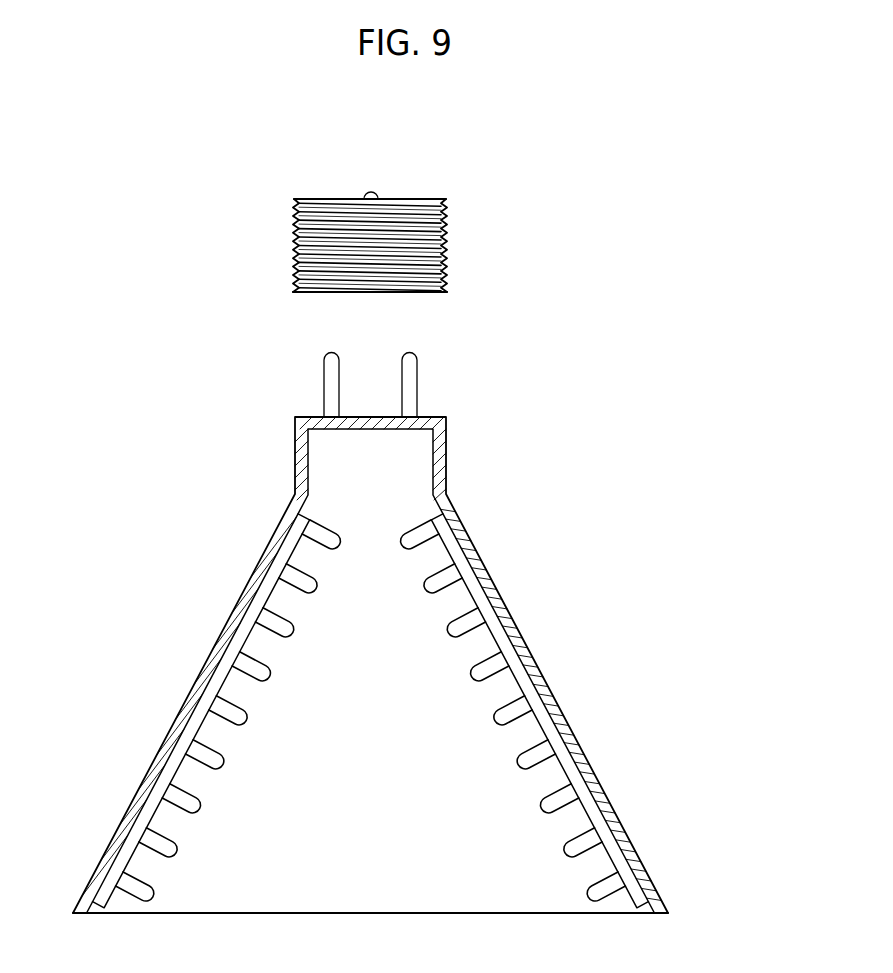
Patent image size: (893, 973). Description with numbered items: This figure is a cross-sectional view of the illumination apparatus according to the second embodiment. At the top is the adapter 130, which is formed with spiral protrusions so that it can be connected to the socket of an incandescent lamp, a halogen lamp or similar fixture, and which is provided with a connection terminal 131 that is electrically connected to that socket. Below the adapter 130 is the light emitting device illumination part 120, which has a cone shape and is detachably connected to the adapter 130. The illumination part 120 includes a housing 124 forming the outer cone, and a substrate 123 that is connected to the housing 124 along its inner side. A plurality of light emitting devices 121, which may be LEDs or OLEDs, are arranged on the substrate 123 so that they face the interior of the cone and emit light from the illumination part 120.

The light emitting device illumination part 120 is at (397, 633).
The light emitting devices 121 is at (470, 622).
The substrate 123 is at (598, 820).
The housing 124 is at (547, 700).
The adapter 130 is at (433, 223).
The connection terminal 131 is at (398, 245).